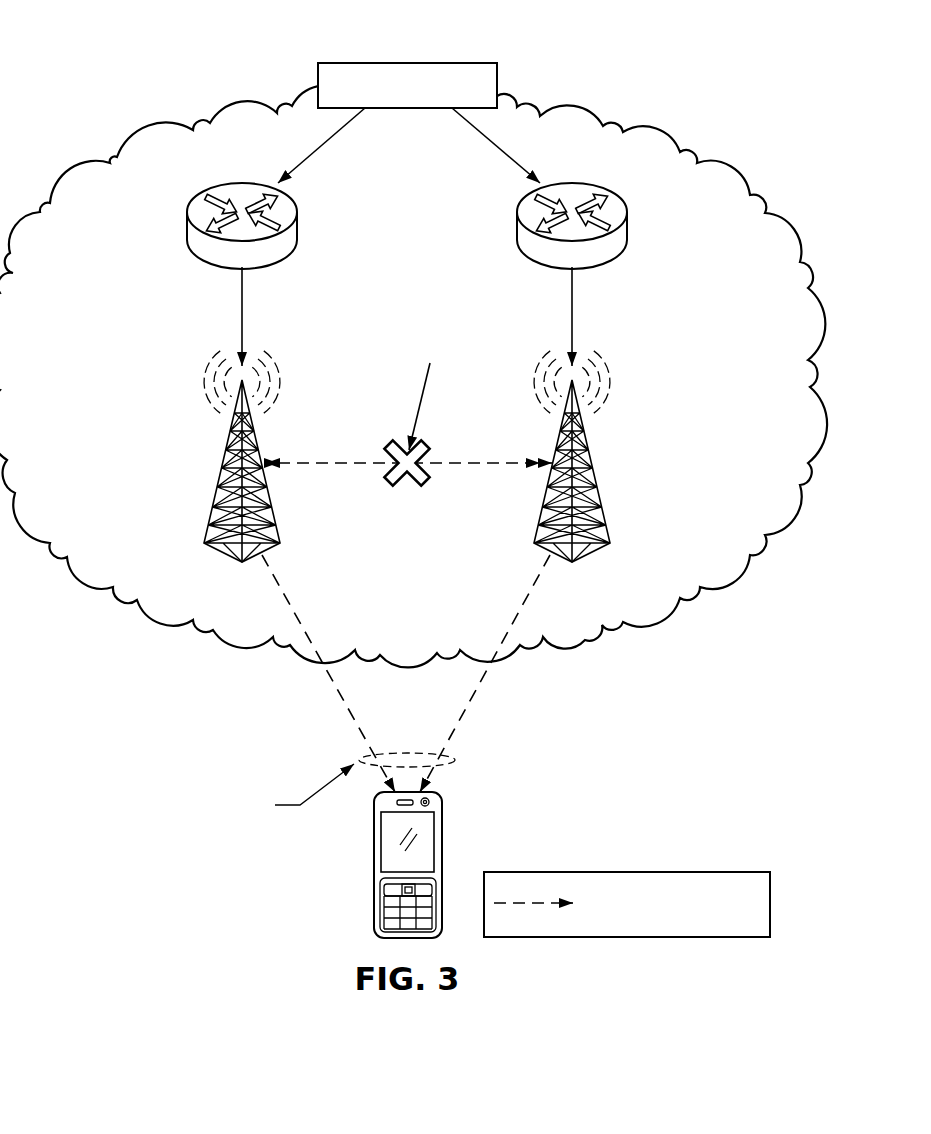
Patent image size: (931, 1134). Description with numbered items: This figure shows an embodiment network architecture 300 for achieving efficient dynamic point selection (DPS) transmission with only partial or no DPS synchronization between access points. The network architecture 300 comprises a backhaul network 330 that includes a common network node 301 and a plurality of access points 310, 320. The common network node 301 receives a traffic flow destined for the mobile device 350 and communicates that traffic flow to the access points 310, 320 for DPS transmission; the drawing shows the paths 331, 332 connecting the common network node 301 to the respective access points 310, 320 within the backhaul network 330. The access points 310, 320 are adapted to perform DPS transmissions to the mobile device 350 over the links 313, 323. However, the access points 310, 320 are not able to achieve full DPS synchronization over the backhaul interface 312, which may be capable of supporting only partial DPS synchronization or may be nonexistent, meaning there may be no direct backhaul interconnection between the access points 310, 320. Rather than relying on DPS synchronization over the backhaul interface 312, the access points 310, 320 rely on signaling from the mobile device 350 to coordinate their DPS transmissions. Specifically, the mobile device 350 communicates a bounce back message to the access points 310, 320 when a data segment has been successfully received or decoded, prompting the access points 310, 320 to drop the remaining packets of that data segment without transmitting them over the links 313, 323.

The network architecture 300 is at (614, 68).
The common network node 301 is at (408, 63).
The access point 310 is at (218, 486).
The backhaul interface 312 is at (466, 466).
The link 313 is at (341, 698).
The access point 320 is at (597, 487).
The link 323 is at (473, 698).
The backhaul network 330 is at (152, 128).
The first router / backhaul link 331 is at (241, 307).
The second router / backhaul link 332 is at (573, 305).
The mobile device 350 is at (374, 866).